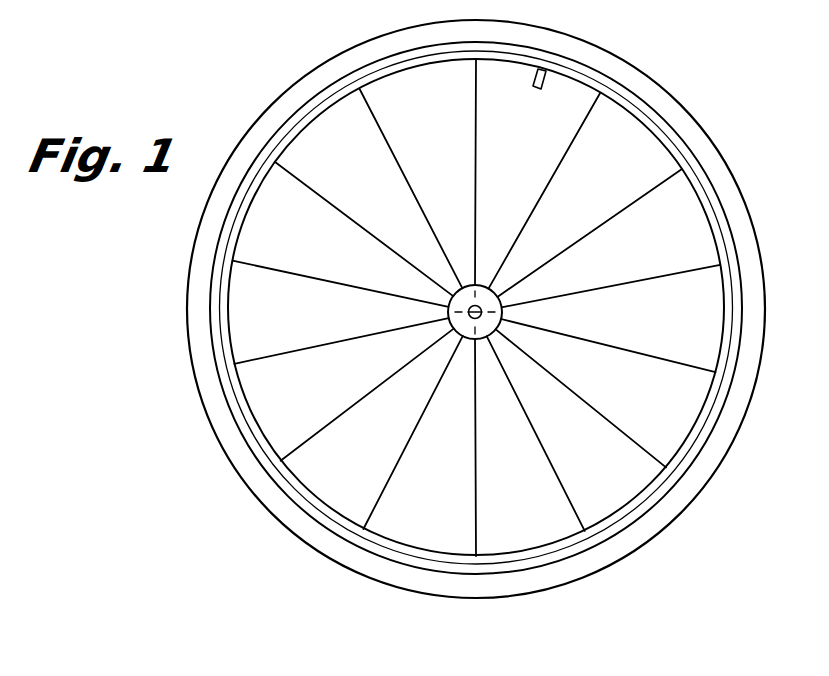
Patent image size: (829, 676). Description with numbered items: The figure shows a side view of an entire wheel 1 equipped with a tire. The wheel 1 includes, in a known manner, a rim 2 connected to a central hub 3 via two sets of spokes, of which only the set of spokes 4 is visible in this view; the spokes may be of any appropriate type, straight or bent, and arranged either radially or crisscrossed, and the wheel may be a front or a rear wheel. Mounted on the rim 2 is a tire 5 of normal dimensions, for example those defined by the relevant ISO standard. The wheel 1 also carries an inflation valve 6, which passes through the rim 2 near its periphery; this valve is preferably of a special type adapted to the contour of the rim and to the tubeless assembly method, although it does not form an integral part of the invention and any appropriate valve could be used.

The wheel 1 is at (196, 447).
The rim 2 is at (727, 232).
The central hub 3 is at (469, 337).
The set of spokes 4 is at (650, 452).
The tire 5 is at (745, 392).
The inflation valve 6 is at (545, 78).